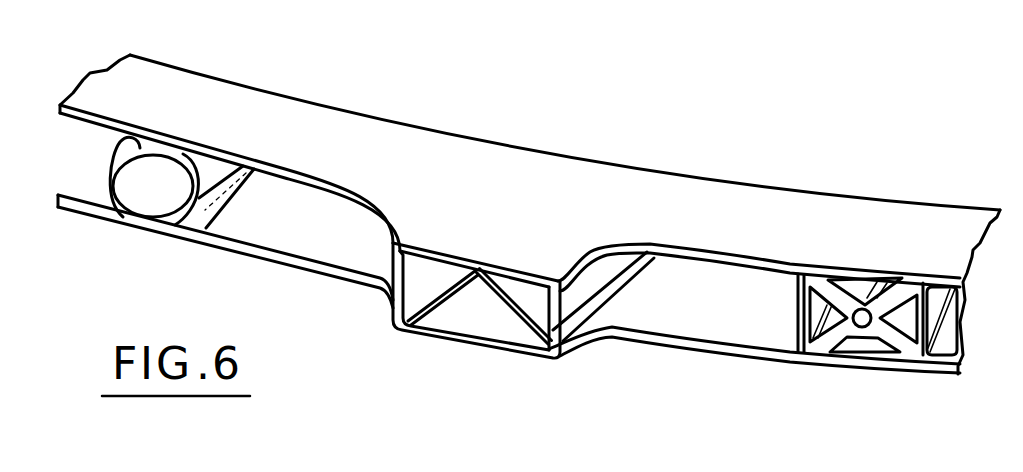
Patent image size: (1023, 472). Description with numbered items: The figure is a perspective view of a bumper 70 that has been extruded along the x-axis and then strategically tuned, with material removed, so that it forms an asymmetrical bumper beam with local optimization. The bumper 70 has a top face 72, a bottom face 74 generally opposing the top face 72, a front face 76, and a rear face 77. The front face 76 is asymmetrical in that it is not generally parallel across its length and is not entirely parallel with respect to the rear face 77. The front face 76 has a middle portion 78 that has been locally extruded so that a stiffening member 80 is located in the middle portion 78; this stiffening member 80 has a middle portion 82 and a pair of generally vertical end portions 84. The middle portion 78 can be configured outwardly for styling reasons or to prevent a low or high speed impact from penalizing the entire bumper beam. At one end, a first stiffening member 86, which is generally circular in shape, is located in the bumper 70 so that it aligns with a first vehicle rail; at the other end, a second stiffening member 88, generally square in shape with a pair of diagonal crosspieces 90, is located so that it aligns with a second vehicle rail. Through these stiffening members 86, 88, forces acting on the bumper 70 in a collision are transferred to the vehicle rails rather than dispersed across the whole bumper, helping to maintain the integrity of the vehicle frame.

The bumper 70 is at (581, 93).
The top face 72 is at (423, 140).
The bottom face 74 is at (293, 270).
The front face 76 is at (612, 298).
The rear face 77 is at (683, 172).
The middle portion 78 is at (423, 255).
The stiffening member 80 is at (523, 327).
The middle portion 82 is at (443, 293).
The vertical end portions 84 is at (403, 280).
The first stiffening member 86 is at (138, 222).
The second stiffening member 88 is at (888, 343).
The diagonal crosspieces 90 is at (833, 335).